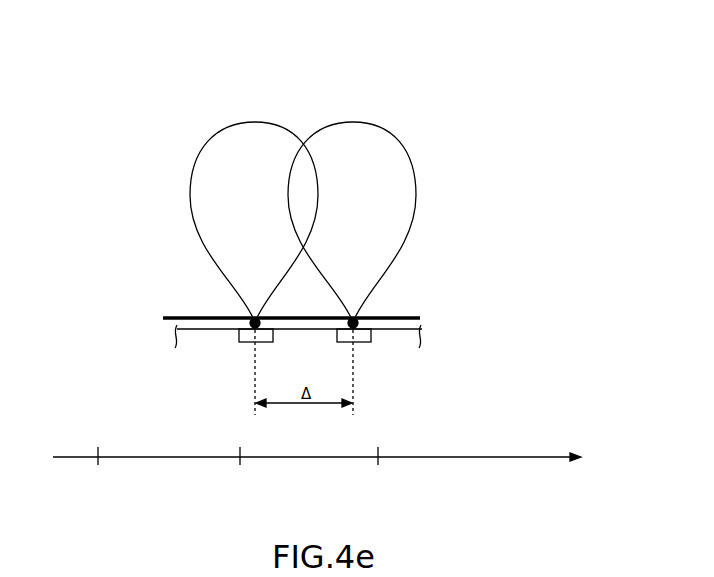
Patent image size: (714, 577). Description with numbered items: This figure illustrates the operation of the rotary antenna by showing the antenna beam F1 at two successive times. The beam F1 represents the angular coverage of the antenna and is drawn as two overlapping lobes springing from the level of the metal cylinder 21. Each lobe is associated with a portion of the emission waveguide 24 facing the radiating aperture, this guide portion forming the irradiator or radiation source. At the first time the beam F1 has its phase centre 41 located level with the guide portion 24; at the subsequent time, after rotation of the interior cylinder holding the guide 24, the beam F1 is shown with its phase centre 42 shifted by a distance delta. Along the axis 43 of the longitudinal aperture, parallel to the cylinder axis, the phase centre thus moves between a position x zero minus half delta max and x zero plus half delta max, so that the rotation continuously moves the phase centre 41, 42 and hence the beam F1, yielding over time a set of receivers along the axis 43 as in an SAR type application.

The antenna beam F1 is at (207, 172).
The metal cylinder 21 is at (192, 317).
The emission waveguide 24 is at (244, 343).
The phase centre 41 is at (255, 318).
The phase centre 42 is at (353, 318).
The axis of the longitudinal aperture 43 is at (515, 458).